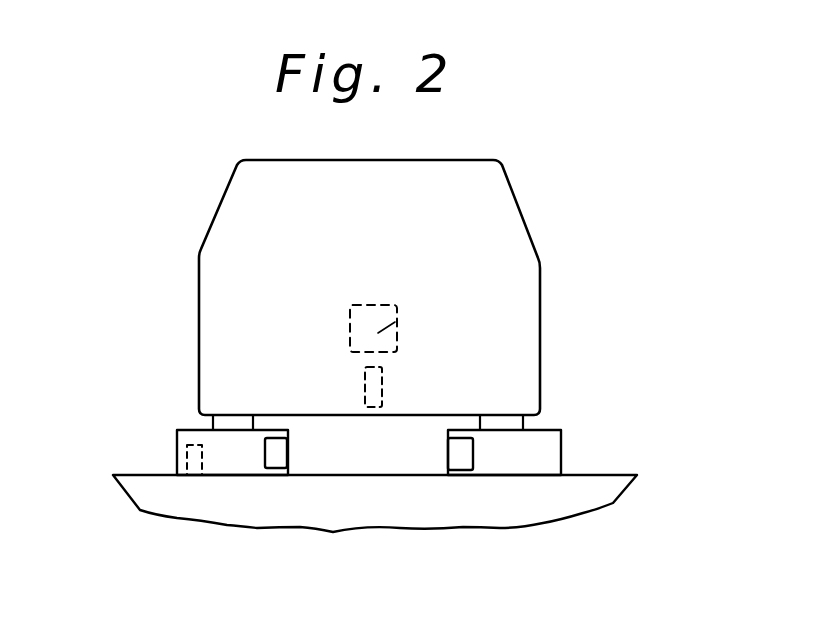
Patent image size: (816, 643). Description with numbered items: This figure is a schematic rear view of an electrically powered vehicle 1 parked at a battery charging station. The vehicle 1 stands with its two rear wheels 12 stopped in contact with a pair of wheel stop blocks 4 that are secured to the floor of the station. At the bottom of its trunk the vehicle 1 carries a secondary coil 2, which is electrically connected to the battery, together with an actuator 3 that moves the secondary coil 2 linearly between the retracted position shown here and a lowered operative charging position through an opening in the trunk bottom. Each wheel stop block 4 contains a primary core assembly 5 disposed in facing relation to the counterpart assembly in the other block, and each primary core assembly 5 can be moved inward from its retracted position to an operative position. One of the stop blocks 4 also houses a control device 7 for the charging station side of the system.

The electrically powered vehicle 1 is at (548, 350).
The secondary coil 2 is at (365, 388).
The actuator 3 is at (397, 322).
The wheel stop block 4 is at (235, 463).
The primary core assembly 5 is at (280, 450).
The control device 7 is at (187, 450).
The rear wheel 12 is at (213, 423).